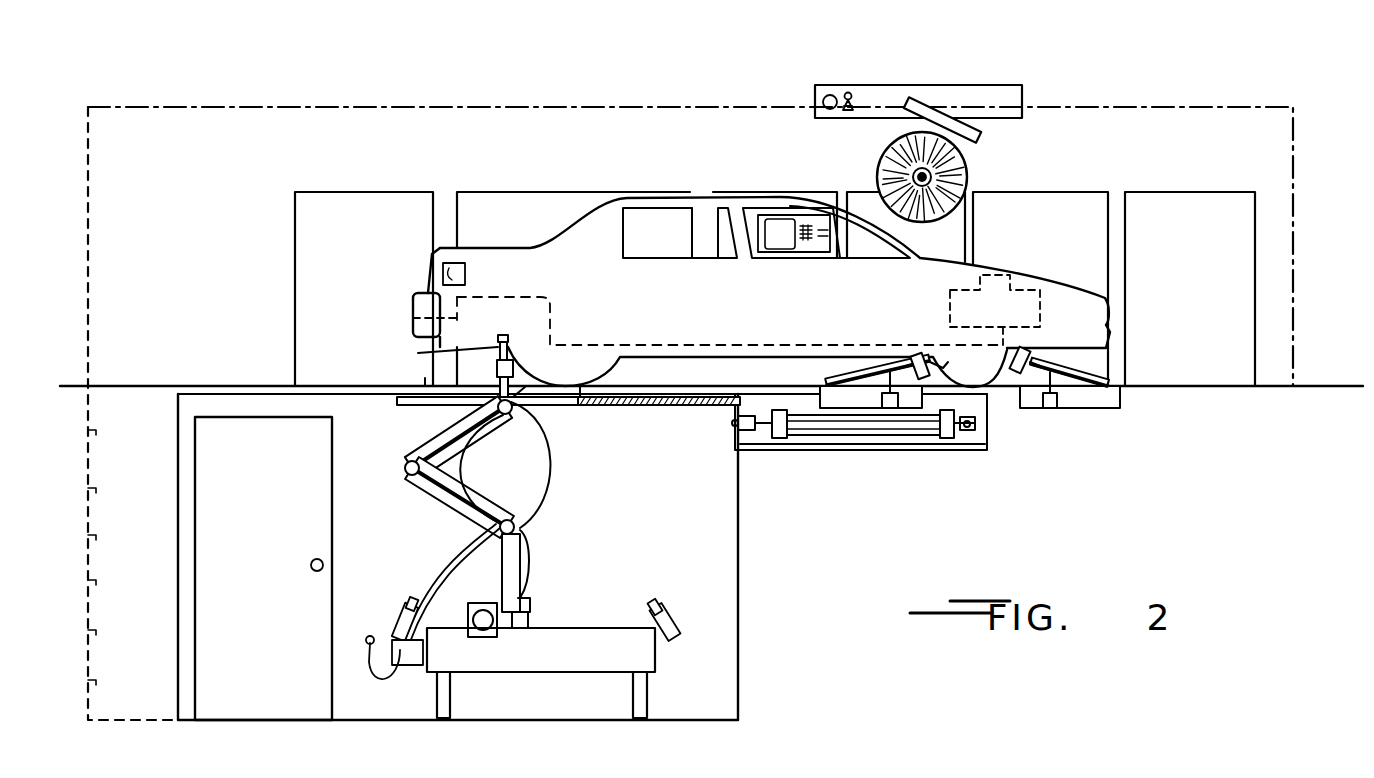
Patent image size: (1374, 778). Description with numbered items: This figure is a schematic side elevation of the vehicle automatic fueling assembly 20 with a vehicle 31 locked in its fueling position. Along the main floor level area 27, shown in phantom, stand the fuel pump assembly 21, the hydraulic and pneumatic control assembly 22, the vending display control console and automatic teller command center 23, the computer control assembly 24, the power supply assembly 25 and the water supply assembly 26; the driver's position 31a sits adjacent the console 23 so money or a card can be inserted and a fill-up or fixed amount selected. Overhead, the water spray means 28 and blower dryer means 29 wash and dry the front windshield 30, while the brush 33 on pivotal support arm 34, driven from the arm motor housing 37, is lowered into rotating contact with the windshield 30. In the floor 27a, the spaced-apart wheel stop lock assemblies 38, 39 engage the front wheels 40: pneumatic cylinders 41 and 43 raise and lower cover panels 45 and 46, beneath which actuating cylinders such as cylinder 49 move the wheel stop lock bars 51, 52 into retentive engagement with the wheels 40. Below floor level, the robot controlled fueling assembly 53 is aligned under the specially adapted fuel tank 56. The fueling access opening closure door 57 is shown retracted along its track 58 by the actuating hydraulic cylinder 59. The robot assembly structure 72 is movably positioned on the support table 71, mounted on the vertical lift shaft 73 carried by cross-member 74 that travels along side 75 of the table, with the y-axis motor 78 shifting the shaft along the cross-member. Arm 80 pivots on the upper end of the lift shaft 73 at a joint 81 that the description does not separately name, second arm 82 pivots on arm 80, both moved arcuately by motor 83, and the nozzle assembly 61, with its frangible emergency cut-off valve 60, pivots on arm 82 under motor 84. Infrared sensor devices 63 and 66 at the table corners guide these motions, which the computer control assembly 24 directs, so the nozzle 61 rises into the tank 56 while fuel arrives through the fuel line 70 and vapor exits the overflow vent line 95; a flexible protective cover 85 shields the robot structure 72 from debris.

The vehicle automatic fueling assembly 20 is at (1293, 105).
The fuel pump assembly 21 is at (350, 192).
The hydraulic and pneumatic control assembly 22 is at (490, 192).
The vending display control console and automatic teller command center 23 is at (818, 192).
The computer control assembly 24 is at (847, 192).
The power supply assembly 25 is at (1075, 192).
The water supply assembly 26 is at (1195, 192).
The main floor level area 27 is at (1298, 225).
The floor 27a is at (1328, 386).
The overhead water spray means 28 is at (850, 90).
The blower dryer means 29 is at (826, 92).
The front windshield 30 is at (890, 233).
The vehicle 31 is at (614, 206).
The driver's position 31a is at (862, 246).
The brush 33 is at (968, 165).
The pivotal support arm 34 is at (981, 131).
The arm motor housing 37 is at (1005, 85).
The wheel stop lock assembly 38 is at (820, 397).
The wheel stop lock assembly 39 is at (1120, 398).
The front wheels 40 is at (990, 380).
The pneumatic cylinder 41 is at (890, 397).
The pneumatic cylinder 43 is at (1052, 408).
The cover panel 45 is at (853, 373).
The cover panel 46 is at (1075, 374).
The wheel lock stop bar pneumatic actuating cylinder 49 is at (899, 366).
The wheel stop lock bar 51 is at (936, 365).
The wheel stop lock bar 52 is at (1024, 355).
The robot controlled fueling assembly 53 is at (695, 522).
The fuel tank 56 is at (413, 318).
The fueling access opening closure door 57 is at (676, 408).
The track 58 is at (636, 418).
The actuating hydraulic cylinder 59 is at (882, 432).
The frangible automatic emergency fuel cut-off valve 60 is at (514, 370).
The automatic cut-off fueling nozzle assembly 61 is at (420, 353).
The electro-optical infrared distance measuring sensor device 63 is at (666, 612).
The electro-optical infrared distance measuring sensor device 66 is at (396, 613).
The fuel line 70 is at (552, 464).
The support table 71 is at (579, 650).
The robot assembly structure 72 is at (506, 512).
The vertical lift shaft 73 is at (514, 563).
The cross-member 74 is at (474, 612).
The side of the support table 75 is at (569, 630).
The y-axis motor 78 is at (486, 636).
The arm 80 is at (455, 502).
The shoulder joint 81 is at (524, 521).
The second arm 82 is at (446, 446).
The motor 83 is at (418, 474).
The motor 84 is at (537, 428).
The flexible protective cover 85 is at (472, 480).
The overflow vent line 95 is at (716, 345).